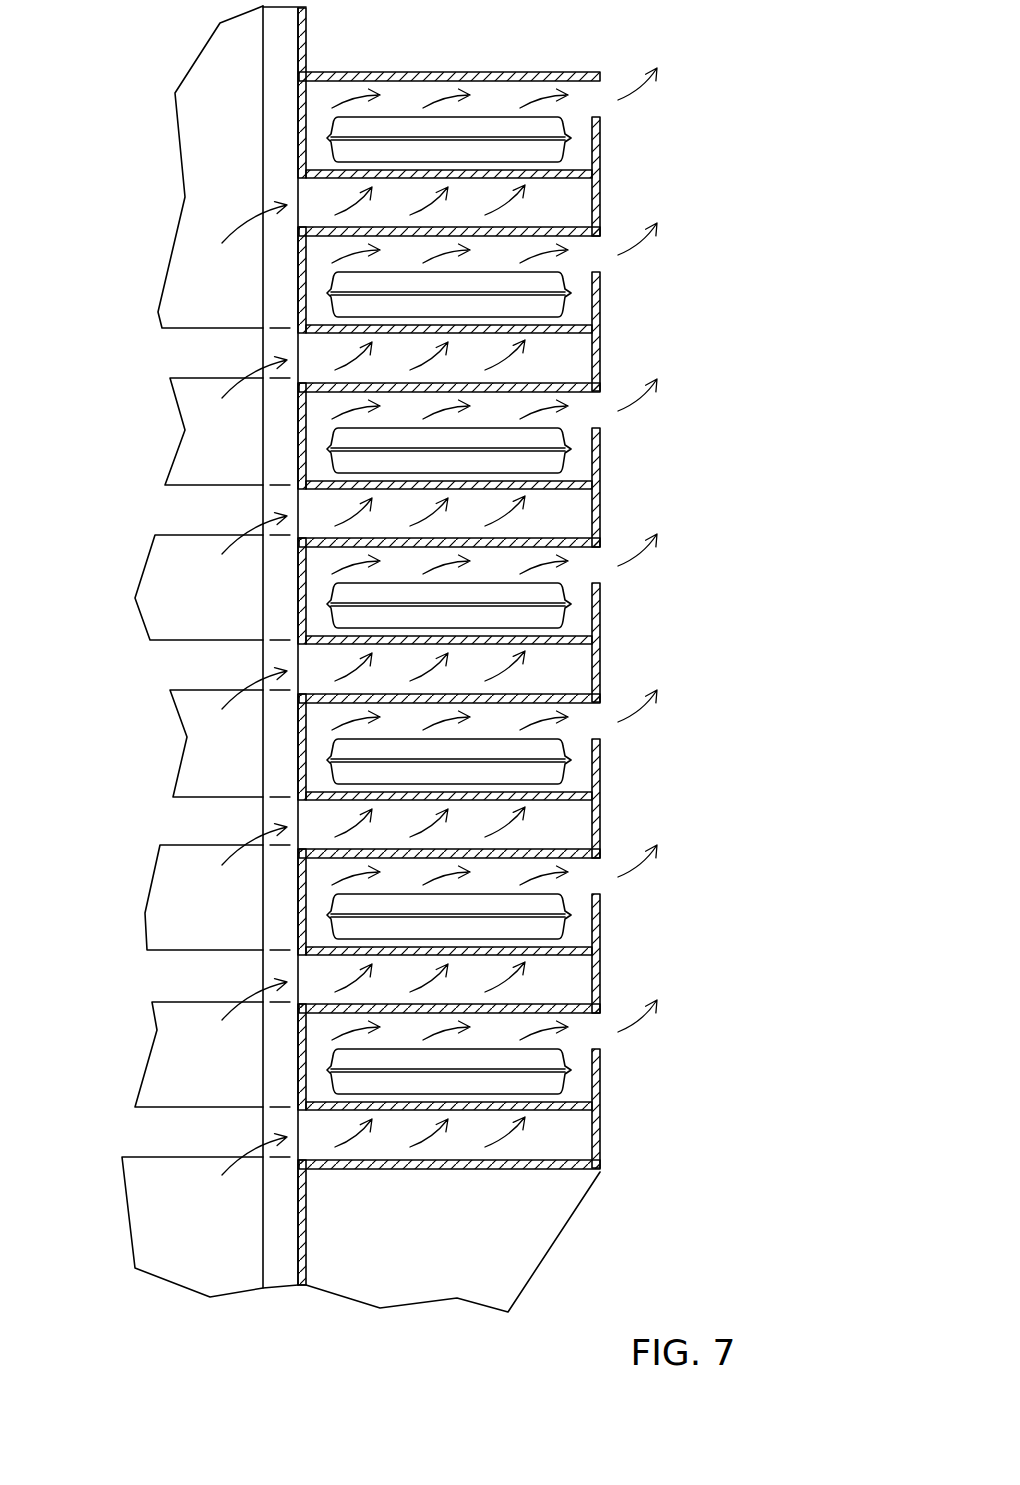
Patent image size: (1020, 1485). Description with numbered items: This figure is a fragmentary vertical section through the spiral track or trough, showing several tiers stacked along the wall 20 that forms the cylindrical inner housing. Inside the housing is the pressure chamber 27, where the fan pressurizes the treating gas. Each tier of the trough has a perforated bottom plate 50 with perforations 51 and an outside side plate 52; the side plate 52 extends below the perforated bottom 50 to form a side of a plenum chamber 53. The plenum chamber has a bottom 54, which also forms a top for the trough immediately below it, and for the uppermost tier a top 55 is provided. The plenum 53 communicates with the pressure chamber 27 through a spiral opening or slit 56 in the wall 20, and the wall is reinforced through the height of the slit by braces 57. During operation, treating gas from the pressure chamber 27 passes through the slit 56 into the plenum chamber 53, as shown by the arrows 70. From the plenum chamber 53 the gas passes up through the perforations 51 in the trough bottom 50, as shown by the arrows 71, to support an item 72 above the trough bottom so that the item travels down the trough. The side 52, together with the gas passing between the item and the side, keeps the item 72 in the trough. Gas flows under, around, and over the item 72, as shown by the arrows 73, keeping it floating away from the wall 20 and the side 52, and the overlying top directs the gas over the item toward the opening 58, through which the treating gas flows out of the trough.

The wall 20 is at (305, 35).
The pressure chamber 27 is at (203, 130).
The perforated bottom plate 50 is at (548, 645).
The perforations 51 is at (488, 644).
The outside side plate 52 is at (602, 925).
The plenum chamber 53 is at (572, 977).
The bottom of plenum chamber 54 is at (558, 848).
The top 55 is at (550, 72).
The spiral opening or slit 56 is at (175, 663).
The braces 57 is at (273, 1075).
The opening 58 is at (597, 260).
The arrows 70 is at (273, 360).
The arrows 71 is at (470, 376).
The item 72 is at (547, 306).
The arrows 73 is at (438, 267).